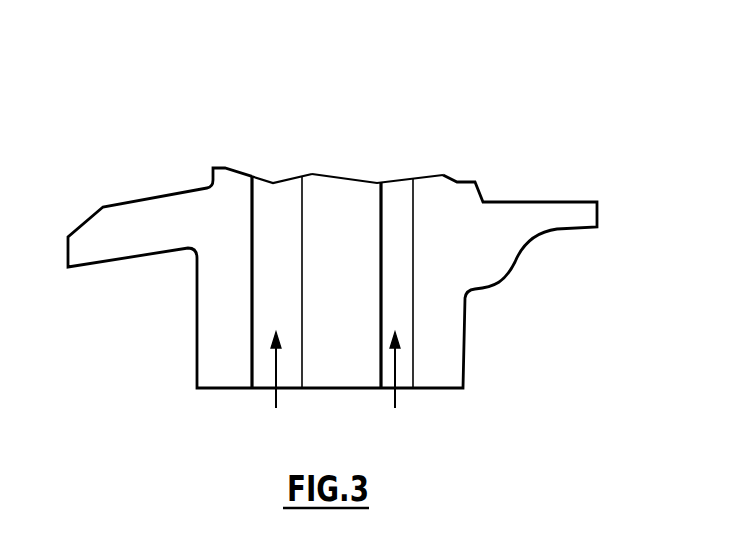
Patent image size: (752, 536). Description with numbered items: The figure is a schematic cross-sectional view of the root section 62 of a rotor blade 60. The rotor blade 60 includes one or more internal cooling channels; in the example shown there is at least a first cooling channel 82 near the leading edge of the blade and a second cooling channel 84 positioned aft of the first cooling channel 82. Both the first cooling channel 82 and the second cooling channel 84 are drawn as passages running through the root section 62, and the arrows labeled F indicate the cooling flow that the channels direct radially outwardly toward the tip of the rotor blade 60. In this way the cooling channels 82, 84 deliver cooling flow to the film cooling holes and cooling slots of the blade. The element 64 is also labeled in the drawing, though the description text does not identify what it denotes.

The rotor blade 60 is at (548, 128).
The root section 62 is at (448, 360).
The flange 64 is at (113, 222).
The first cooling channel 82 is at (270, 315).
The second cooling channel 84 is at (398, 202).